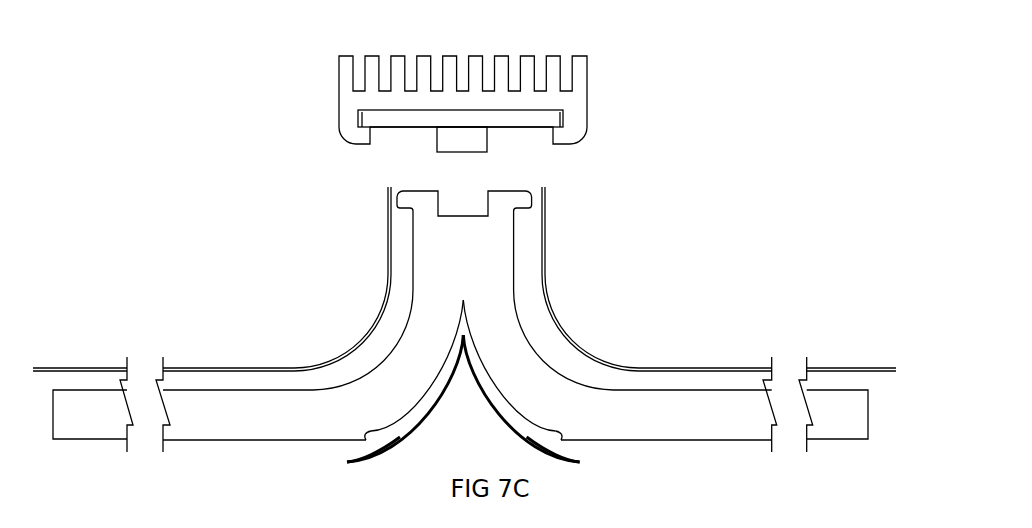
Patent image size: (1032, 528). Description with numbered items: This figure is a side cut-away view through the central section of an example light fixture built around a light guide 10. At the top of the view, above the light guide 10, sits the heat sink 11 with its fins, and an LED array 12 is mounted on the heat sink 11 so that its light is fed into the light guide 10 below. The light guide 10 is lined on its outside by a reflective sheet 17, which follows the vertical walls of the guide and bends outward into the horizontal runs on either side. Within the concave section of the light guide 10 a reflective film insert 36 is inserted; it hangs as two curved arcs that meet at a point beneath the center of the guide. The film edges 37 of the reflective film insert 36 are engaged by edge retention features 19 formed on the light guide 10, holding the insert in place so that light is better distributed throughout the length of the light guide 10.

The light guide 10 is at (456, 291).
The heat sink 11 is at (585, 107).
The LED array 12 is at (380, 117).
The reflective sheet 17 is at (388, 238).
The edge retention features 19 is at (367, 433).
The reflective film insert 36 is at (437, 410).
The film edges 37 is at (347, 462).